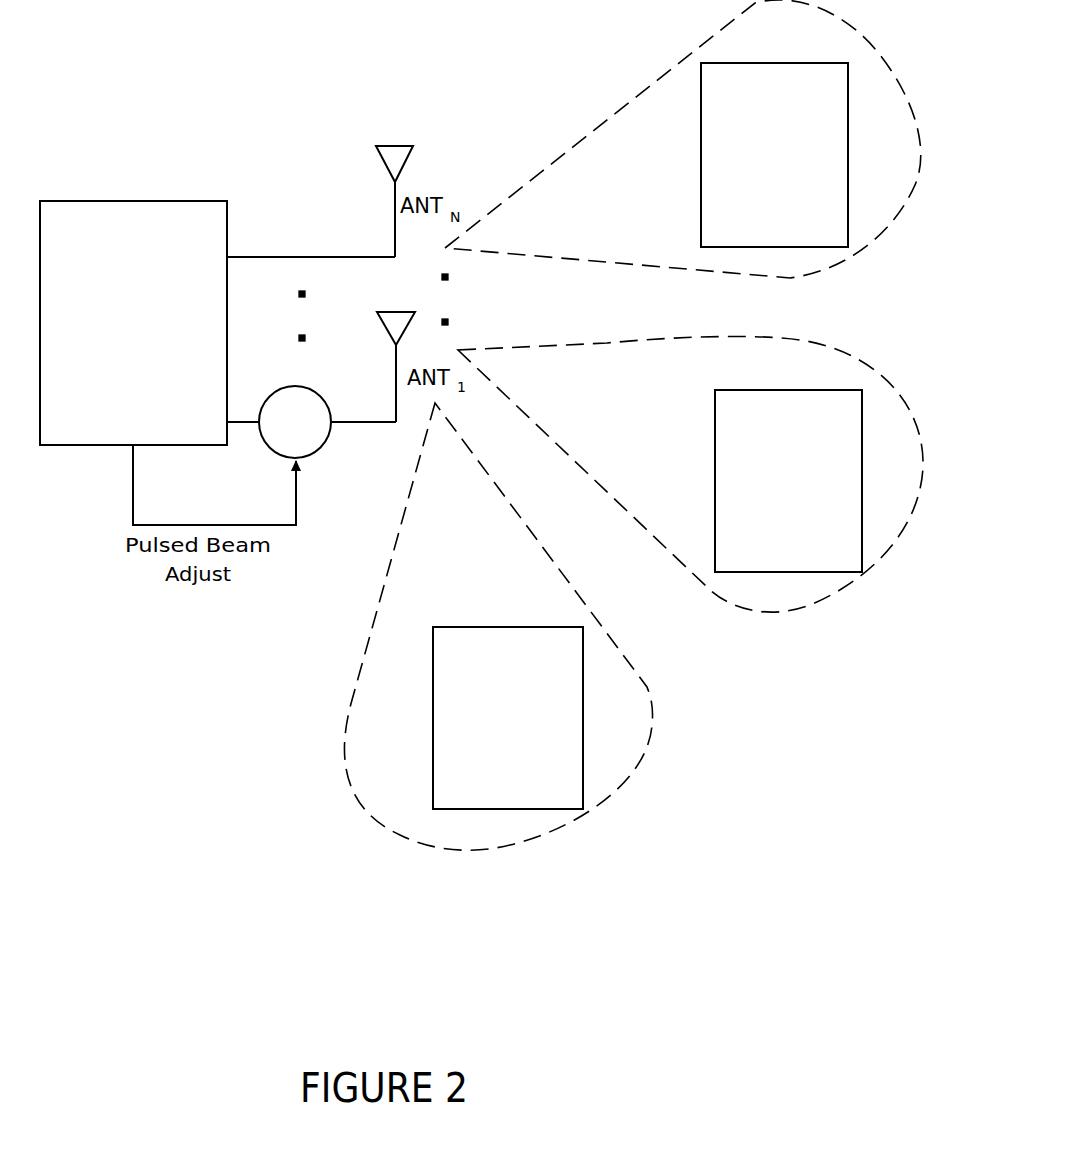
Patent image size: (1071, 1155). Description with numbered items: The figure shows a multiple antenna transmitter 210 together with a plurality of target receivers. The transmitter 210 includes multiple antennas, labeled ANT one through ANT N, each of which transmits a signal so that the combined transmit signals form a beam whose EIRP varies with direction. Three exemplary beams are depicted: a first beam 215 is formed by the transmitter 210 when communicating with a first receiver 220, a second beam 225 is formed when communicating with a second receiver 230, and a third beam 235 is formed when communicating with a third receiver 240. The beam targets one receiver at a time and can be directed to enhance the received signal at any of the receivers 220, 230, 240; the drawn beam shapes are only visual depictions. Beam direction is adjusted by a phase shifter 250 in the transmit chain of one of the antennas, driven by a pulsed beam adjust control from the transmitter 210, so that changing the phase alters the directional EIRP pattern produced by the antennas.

The transmitter 210 is at (115, 364).
The first beam 215 is at (628, 173).
The first receiver 220 is at (755, 197).
The second beam 225 is at (617, 387).
The second receiver 230 is at (770, 522).
The third beam 235 is at (383, 680).
The third receiver 240 is at (489, 759).
The phase shifter 250 is at (323, 461).